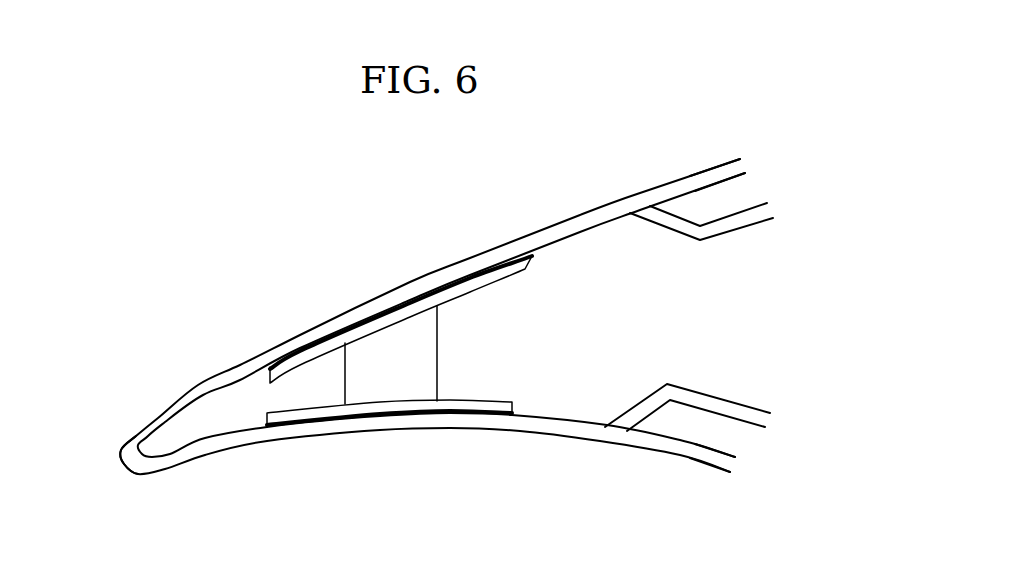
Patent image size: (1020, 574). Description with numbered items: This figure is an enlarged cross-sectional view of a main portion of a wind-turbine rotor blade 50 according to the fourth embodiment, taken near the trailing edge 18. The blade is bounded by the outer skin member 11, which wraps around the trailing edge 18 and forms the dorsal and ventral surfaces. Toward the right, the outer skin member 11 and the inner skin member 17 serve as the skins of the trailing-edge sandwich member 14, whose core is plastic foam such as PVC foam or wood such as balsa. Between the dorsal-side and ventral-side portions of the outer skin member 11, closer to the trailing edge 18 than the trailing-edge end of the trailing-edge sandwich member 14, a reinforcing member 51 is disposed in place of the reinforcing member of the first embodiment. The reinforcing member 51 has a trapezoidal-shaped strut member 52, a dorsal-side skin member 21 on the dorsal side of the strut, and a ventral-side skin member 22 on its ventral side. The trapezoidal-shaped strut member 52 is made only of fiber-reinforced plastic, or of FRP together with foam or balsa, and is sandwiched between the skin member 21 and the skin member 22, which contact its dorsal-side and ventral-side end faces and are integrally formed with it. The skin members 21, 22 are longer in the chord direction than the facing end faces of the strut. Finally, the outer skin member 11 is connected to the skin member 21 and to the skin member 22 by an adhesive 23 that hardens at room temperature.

The wind-turbine rotor blade 50 is at (169, 196).
The outer skin member 11 is at (573, 218).
The trailing-edge sandwich member 14 is at (714, 196).
The inner skin member 17 is at (740, 223).
The trailing edge 18 is at (120, 462).
The skin member 21 is at (502, 272).
The skin member 22 is at (490, 405).
The adhesive 23 is at (357, 325).
The reinforcing member 51 is at (456, 369).
The trapezoidal-shaped strut member 52 is at (420, 360).